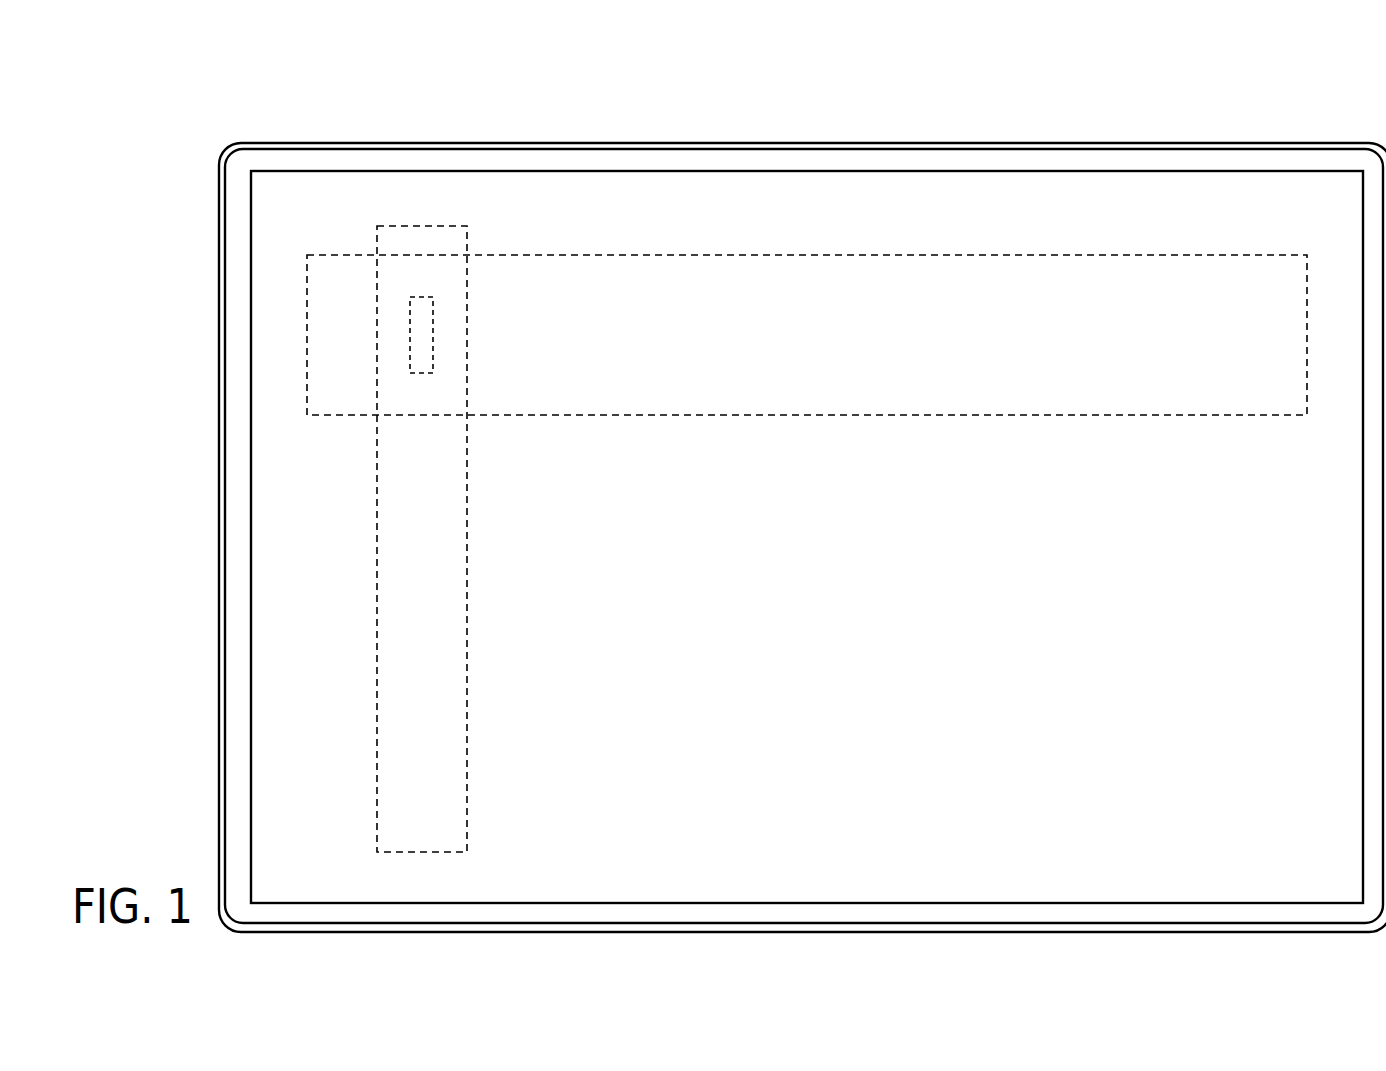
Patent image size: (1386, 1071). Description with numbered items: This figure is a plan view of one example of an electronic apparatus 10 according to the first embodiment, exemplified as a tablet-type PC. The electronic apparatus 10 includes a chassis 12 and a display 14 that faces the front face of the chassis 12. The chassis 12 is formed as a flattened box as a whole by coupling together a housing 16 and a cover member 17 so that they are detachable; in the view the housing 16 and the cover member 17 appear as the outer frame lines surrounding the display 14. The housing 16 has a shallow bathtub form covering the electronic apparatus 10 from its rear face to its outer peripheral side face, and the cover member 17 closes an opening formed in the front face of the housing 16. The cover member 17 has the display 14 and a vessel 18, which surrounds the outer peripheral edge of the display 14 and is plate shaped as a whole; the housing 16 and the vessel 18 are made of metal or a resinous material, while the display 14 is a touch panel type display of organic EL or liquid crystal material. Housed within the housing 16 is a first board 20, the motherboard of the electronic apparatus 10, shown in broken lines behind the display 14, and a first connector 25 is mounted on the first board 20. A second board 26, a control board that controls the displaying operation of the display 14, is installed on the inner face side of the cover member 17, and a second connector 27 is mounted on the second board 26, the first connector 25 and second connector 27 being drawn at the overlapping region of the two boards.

The electronic apparatus 10 is at (284, 49).
The chassis 12 is at (918, 77).
The display 14 is at (1020, 186).
The housing 16 is at (778, 134).
The cover member 17 is at (868, 142).
The vessel 18 is at (1200, 158).
The first board 20 is at (557, 255).
The first connector 25 is at (422, 300).
The second board 26 is at (446, 226).
The second connector 27 is at (421, 335).